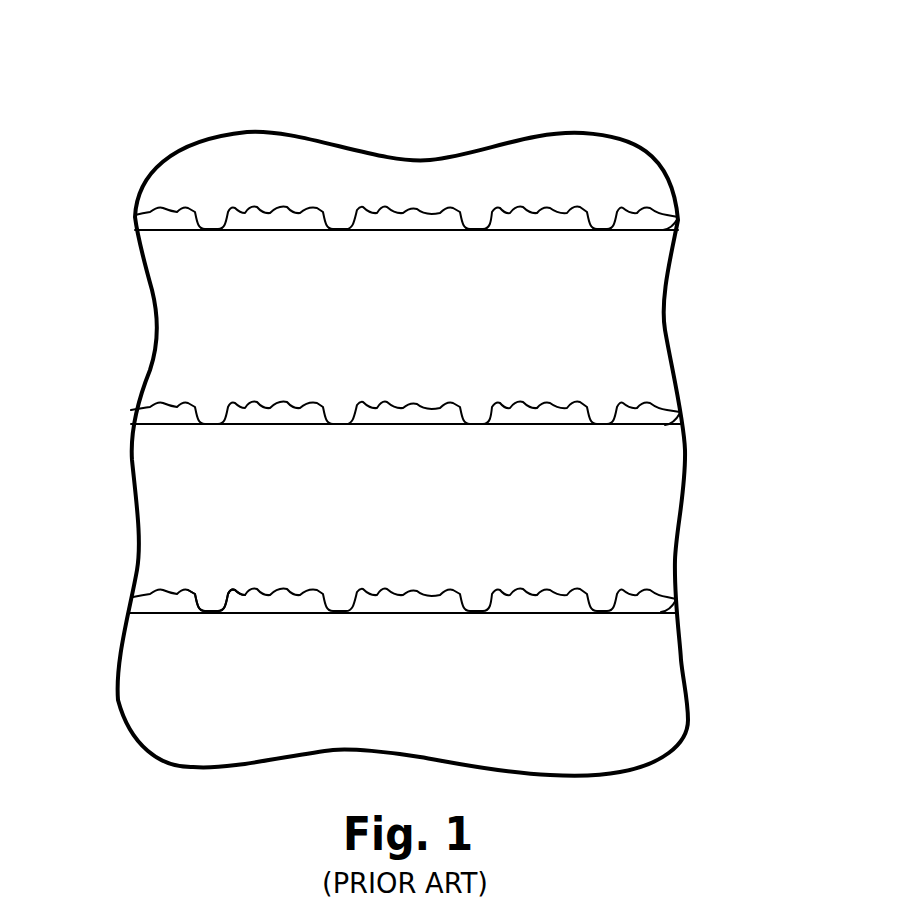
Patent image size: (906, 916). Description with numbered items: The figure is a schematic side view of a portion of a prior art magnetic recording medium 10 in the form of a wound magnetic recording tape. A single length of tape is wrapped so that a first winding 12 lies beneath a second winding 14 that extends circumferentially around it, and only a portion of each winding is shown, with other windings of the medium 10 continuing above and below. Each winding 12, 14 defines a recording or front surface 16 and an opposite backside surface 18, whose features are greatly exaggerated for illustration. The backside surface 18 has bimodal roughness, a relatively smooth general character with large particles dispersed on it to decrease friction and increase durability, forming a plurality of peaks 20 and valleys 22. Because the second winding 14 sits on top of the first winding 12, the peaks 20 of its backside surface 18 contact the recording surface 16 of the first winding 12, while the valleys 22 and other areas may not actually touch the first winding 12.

The magnetic recording medium 10 is at (686, 54).
The first winding 12 is at (670, 505).
The second winding 14 is at (667, 325).
The recording surface 16 is at (680, 217).
The backside surface 18 is at (676, 612).
The peaks 20 is at (212, 603).
The valleys 22 is at (230, 595).